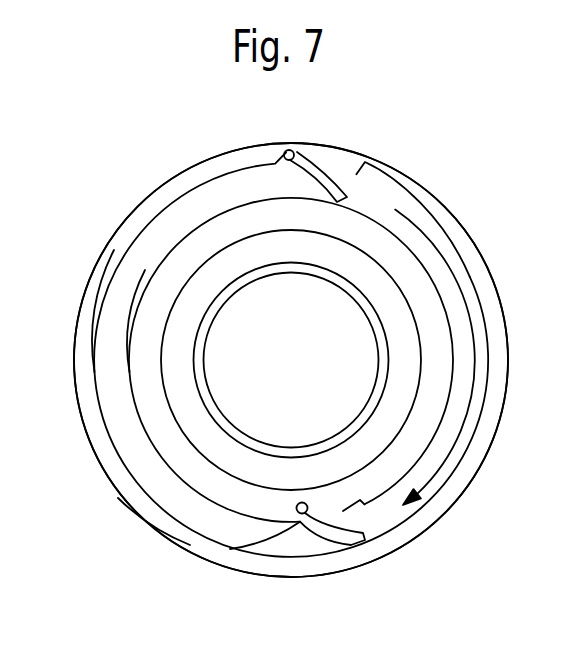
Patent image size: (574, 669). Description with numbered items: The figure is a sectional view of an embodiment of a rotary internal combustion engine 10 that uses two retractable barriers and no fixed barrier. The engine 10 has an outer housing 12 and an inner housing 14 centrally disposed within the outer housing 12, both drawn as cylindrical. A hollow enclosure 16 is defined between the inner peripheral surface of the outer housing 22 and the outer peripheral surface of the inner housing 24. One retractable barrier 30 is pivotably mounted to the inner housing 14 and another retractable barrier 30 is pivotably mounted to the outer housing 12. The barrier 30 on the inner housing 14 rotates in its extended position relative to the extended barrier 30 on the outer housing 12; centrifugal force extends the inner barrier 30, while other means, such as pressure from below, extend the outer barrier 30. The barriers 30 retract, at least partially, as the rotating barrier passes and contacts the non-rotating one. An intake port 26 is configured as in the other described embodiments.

The rotary internal combustion engine 10 is at (179, 594).
The outer housing 12 is at (200, 177).
The inner housing 14 is at (183, 270).
The hollow enclosure 16 is at (138, 467).
The inner peripheral surface of the outer housing 22 is at (164, 531).
The outer peripheral surface of the inner housing 24 is at (250, 518).
The intake port 26 is at (343, 511).
The retractable barrier 30 is at (289, 150).